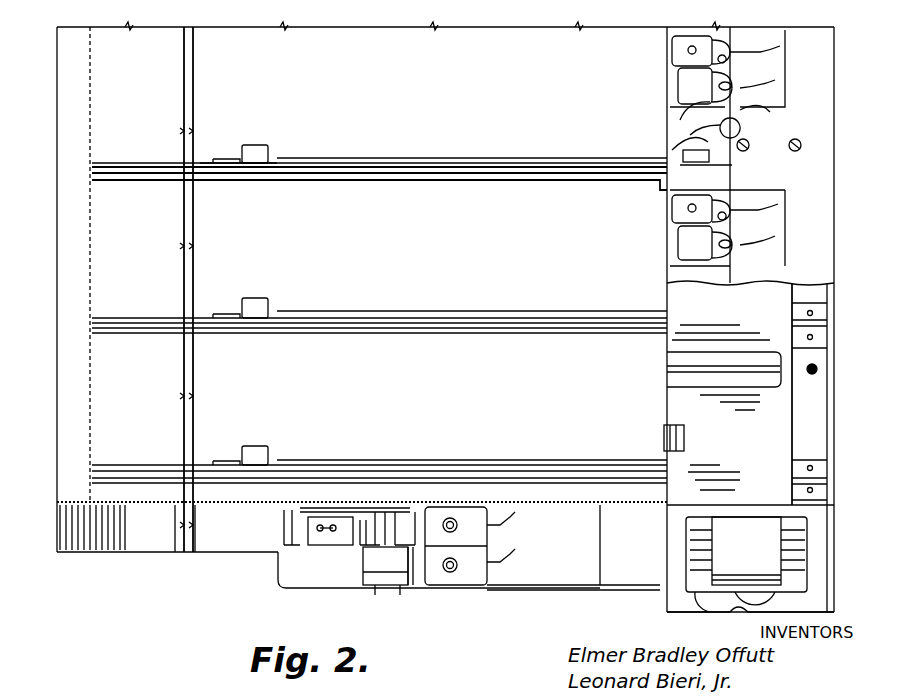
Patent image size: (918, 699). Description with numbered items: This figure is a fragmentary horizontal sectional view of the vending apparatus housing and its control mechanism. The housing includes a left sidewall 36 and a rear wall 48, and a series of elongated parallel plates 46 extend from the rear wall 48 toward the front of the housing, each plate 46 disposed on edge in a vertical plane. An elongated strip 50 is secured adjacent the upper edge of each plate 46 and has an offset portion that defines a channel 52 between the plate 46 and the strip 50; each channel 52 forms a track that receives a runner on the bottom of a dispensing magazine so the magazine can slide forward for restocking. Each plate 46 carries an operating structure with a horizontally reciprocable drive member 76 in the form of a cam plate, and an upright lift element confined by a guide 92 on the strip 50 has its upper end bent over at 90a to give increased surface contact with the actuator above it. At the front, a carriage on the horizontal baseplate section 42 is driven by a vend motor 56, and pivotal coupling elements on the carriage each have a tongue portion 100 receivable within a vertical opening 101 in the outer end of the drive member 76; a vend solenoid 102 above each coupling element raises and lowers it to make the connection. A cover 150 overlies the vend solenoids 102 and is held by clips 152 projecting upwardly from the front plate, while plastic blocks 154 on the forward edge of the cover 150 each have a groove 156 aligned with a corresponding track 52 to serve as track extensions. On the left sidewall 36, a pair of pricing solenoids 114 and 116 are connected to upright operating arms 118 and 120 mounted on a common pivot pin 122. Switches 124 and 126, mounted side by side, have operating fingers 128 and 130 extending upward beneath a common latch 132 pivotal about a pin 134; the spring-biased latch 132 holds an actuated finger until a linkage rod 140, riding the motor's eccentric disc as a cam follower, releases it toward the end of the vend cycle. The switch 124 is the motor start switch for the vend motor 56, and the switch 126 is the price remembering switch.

The left sidewall 36 is at (224, 510).
The horizontal baseplate section 42 is at (820, 590).
The plate 46 is at (392, 183).
The rear wall 48 is at (90, 40).
The strip 50 is at (398, 159).
The channel 52 is at (315, 178).
The vend motor 56 is at (738, 502).
The drive member 76 is at (769, 144).
The bent-over upper end of lift element 90a is at (256, 145).
The guide 92 is at (240, 158).
The tongue portion 100 is at (734, 132).
The vertical opening 101 is at (720, 162).
The vend solenoid 102 is at (680, 80).
The solenoid 114 is at (498, 540).
The solenoid 116 is at (463, 508).
The operating arm 118 is at (374, 588).
The operating arm 120 is at (420, 510).
The pivot pin 122 is at (418, 576).
The switch 124 is at (328, 547).
The switch 126 is at (330, 506).
The operating finger 128 is at (358, 550).
The operating finger 130 is at (382, 515).
The latch 132 is at (285, 566).
The pin 134 is at (292, 530).
The linkage rod 140 is at (534, 590).
The cover 150 is at (816, 424).
The clip 152 is at (664, 440).
The plastic block 154 is at (823, 327).
The groove 156 is at (795, 330).